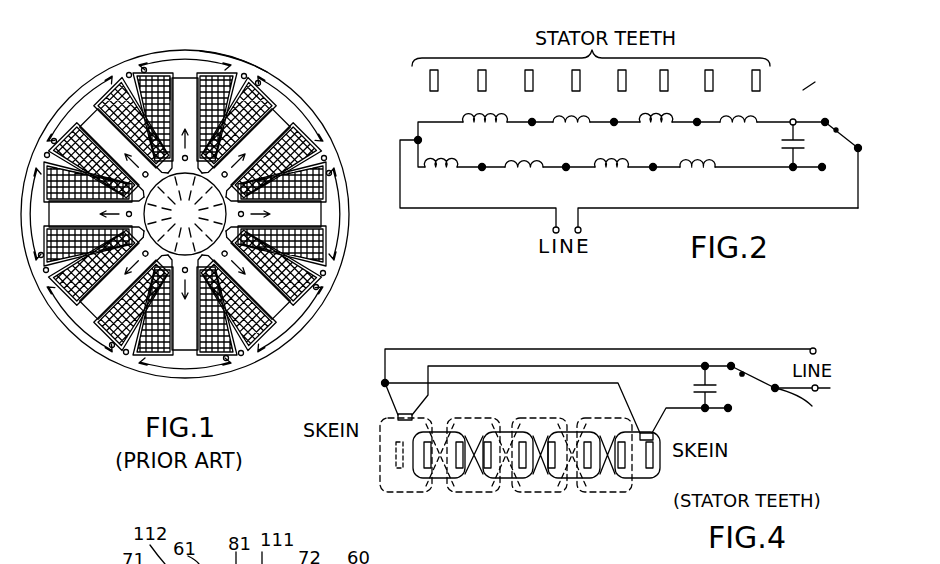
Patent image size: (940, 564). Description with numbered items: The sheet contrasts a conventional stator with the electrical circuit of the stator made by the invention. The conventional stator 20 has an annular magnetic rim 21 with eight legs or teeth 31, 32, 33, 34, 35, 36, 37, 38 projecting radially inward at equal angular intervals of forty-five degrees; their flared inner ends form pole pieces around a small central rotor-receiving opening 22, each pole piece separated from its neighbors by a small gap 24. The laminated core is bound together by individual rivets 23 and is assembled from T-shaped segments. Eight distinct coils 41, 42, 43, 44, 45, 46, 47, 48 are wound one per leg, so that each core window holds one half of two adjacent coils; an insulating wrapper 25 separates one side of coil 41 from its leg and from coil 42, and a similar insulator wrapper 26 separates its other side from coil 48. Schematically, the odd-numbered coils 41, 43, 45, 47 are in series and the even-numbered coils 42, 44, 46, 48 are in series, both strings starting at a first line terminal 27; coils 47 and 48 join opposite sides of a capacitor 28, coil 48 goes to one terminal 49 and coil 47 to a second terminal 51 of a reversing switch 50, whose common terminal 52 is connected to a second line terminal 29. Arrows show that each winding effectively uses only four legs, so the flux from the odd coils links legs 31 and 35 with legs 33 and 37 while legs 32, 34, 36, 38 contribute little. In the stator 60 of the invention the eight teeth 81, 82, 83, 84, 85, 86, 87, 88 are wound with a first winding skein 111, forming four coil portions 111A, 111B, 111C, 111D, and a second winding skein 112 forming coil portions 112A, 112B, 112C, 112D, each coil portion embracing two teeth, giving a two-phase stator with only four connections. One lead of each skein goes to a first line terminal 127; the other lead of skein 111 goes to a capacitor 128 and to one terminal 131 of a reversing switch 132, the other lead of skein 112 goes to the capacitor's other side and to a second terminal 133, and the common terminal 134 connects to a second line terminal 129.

In FIG. 1, the stator 20 is at (275, 55).
In FIG. 2, the stator 20 is at (818, 92).
In FIG. 1, the annular magnetic rim 21 is at (322, 128).
In FIG. 1, the central rotor-receiving opening 22 is at (185, 214).
In FIG. 1, the rivets 23 is at (47, 273).
In FIG. 1, the gap 24 is at (185, 214).
In FIG. 1, the insulating wrapper 25 is at (238, 62).
In FIG. 1, the insulator wrapper 26 is at (160, 78).
In FIG. 2, the first line terminal 27 is at (552, 231).
In FIG. 2, the capacitor 28 is at (800, 146).
In FIG. 2, the second line terminal 29 is at (582, 231).
In FIG. 1, the stator leg 31 is at (200, 105).
In FIG. 2, the stator leg 31 is at (428, 75).
In FIG. 1, the core leg 32 is at (262, 116).
In FIG. 2, the core leg 32 is at (478, 78).
In FIG. 1, the core leg 33 is at (291, 225).
In FIG. 2, the core leg 33 is at (523, 80).
In FIG. 1, the core leg 34 is at (276, 320).
In FIG. 2, the core leg 34 is at (570, 80).
In FIG. 1, the core leg 35 is at (172, 338).
In FIG. 2, the core leg 35 is at (616, 80).
In FIG. 1, the core leg 36 is at (118, 288).
In FIG. 2, the core leg 36 is at (658, 80).
In FIG. 1, the core leg 37 is at (99, 215).
In FIG. 2, the core leg 37 is at (703, 80).
In FIG. 1, the core leg 38 is at (112, 137).
In FIG. 2, the core leg 38 is at (750, 80).
In FIG. 1, the coil 41 is at (208, 80).
In FIG. 2, the coil 41 is at (436, 172).
In FIG. 1, the coil 42 is at (300, 140).
In FIG. 2, the coil 42 is at (488, 127).
In FIG. 1, the coil 43 is at (318, 222).
In FIG. 2, the coil 43 is at (525, 172).
In FIG. 1, the coil 44 is at (262, 310).
In FIG. 2, the coil 44 is at (575, 127).
In FIG. 1, the coil 45 is at (205, 345).
In FIG. 2, the coil 45 is at (615, 172).
In FIG. 1, the coil 46 is at (132, 302).
In FIG. 2, the coil 46 is at (652, 127).
In FIG. 1, the coil 47 is at (60, 212).
In FIG. 2, the coil 47 is at (692, 172).
In FIG. 1, the coil 48 is at (70, 136).
In FIG. 2, the coil 48 is at (730, 127).
In FIG. 2, the switch terminal 49 is at (825, 119).
In FIG. 2, the reversing switch 50 is at (856, 145).
In FIG. 2, the second switch terminal 51 is at (822, 171).
In FIG. 2, the common switch terminal 52 is at (856, 152).
In FIG. 4, the stator 60 is at (523, 338).
In FIG. 4, the radial leg element 81 is at (428, 472).
In FIG. 4, the leg element 82 is at (459, 472).
In FIG. 4, the leg element 83 is at (487, 472).
In FIG. 4, the leg element 84 is at (522, 472).
In FIG. 4, the leg element 85 is at (551, 472).
In FIG. 4, the leg element 86 is at (587, 472).
In FIG. 4, the leg element 87 is at (622, 472).
In FIG. 4, the leg element 88 is at (652, 480).
In FIG. 4, the first winding skein 111 is at (662, 470).
In FIG. 4, the coil portion 111A is at (661, 444).
In FIG. 4, the coil portion 111B is at (568, 430).
In FIG. 4, the coil portion 111C is at (505, 430).
In FIG. 4, the coil portion 111D is at (440, 430).
In FIG. 4, the second winding skein 112 is at (378, 460).
In FIG. 4, the coil portion 112A is at (378, 476).
In FIG. 4, the coil portion 112B is at (467, 495).
In FIG. 4, the coil portion 112C is at (556, 496).
In FIG. 4, the coil portion 112D is at (600, 494).
In FIG. 4, the first line terminal 127 is at (814, 348).
In FIG. 4, the capacitor 128 is at (695, 388).
In FIG. 4, the second line terminal 129 is at (821, 388).
In FIG. 4, the switch terminal 131 is at (729, 412).
In FIG. 4, the reversing switch 132 is at (758, 384).
In FIG. 4, the second switch terminal 133 is at (734, 364).
In FIG. 4, the common switch terminal 134 is at (812, 407).